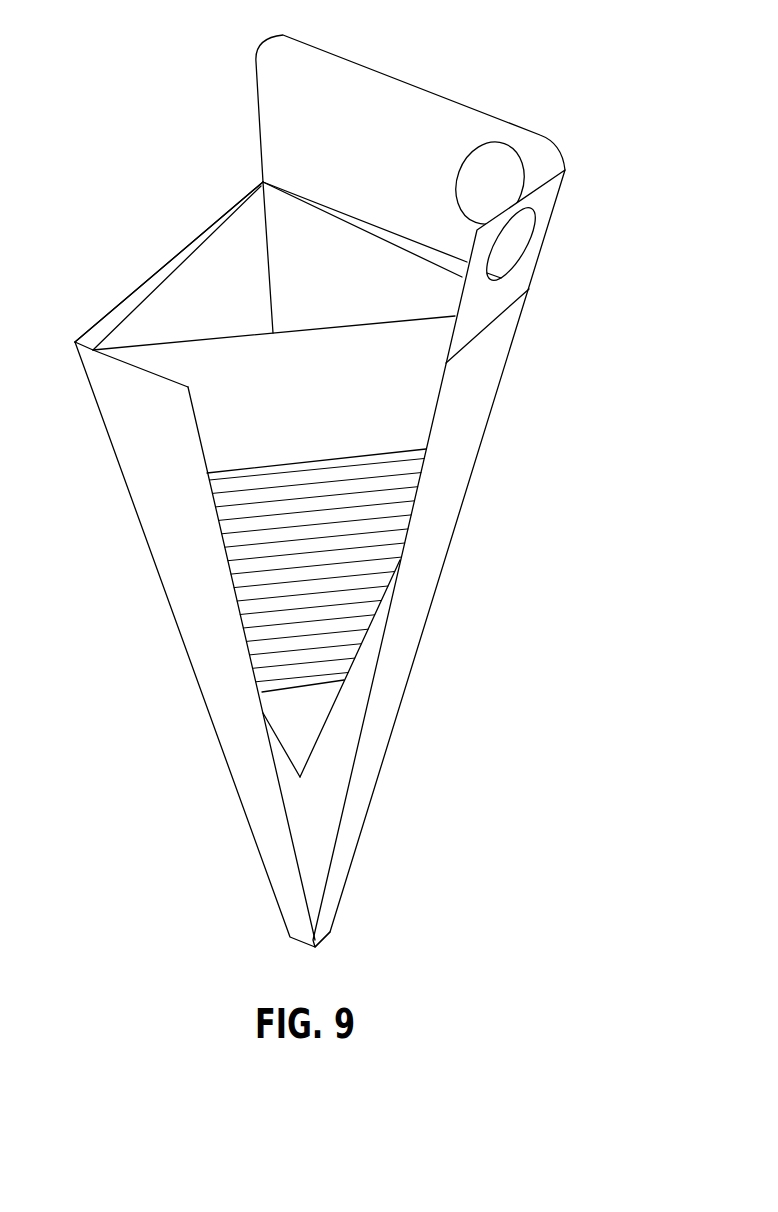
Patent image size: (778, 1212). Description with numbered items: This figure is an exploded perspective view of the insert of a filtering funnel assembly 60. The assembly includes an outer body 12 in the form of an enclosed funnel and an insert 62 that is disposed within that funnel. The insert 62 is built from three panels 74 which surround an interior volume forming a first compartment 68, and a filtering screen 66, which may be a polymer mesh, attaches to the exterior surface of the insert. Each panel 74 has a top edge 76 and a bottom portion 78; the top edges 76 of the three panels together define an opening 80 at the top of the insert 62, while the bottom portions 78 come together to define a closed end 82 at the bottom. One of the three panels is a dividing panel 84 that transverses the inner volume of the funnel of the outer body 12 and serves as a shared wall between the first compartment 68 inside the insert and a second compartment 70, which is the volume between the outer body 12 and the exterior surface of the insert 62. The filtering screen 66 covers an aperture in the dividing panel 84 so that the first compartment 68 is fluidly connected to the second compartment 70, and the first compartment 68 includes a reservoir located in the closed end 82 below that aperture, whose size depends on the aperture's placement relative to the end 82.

The outer body 12 is at (477, 388).
The filtering funnel assembly 60 is at (130, 200).
The insert 62 is at (188, 312).
The filtering screen 66 is at (313, 555).
The first compartment 68 is at (356, 250).
The second compartment 70 is at (308, 843).
The panel 74 is at (238, 301).
The top edge 76 is at (157, 347).
The bottom portion 78 is at (296, 758).
The opening 80 is at (218, 200).
The closed end 82 is at (312, 788).
The dividing panel 84 is at (301, 406).